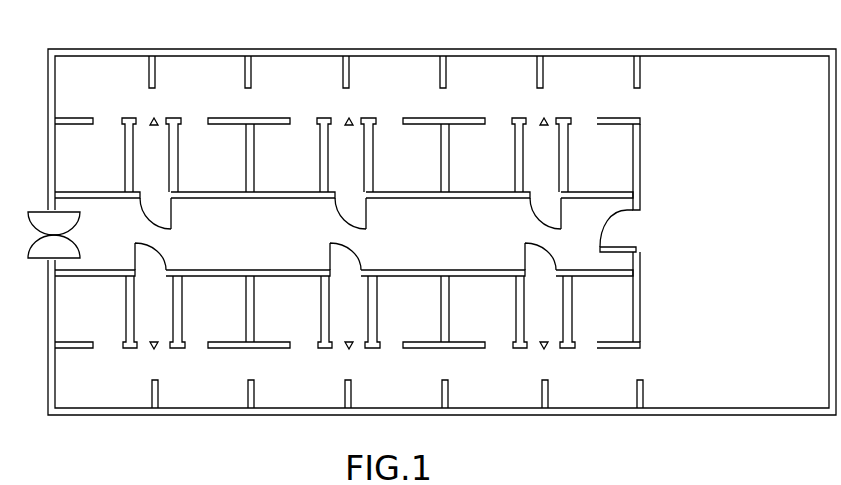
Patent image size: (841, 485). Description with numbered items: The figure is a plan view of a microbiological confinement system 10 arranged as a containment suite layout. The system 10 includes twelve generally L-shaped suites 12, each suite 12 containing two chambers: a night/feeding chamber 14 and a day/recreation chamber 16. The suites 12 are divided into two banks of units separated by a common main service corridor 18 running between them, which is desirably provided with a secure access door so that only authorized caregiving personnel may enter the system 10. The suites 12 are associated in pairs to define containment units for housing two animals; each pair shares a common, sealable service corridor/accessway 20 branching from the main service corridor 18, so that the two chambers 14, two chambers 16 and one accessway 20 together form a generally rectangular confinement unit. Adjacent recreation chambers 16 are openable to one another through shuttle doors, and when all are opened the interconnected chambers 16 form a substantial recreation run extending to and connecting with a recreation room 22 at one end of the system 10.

The microbiological confinement system 10 is at (310, 49).
The suite 12 is at (122, 50).
The night/feeding chamber 14 is at (603, 312).
The day/recreation chamber 16 is at (193, 393).
The main service corridor 18 is at (455, 230).
The service corridor/accessway 20 is at (537, 148).
The recreation room 22 is at (746, 330).